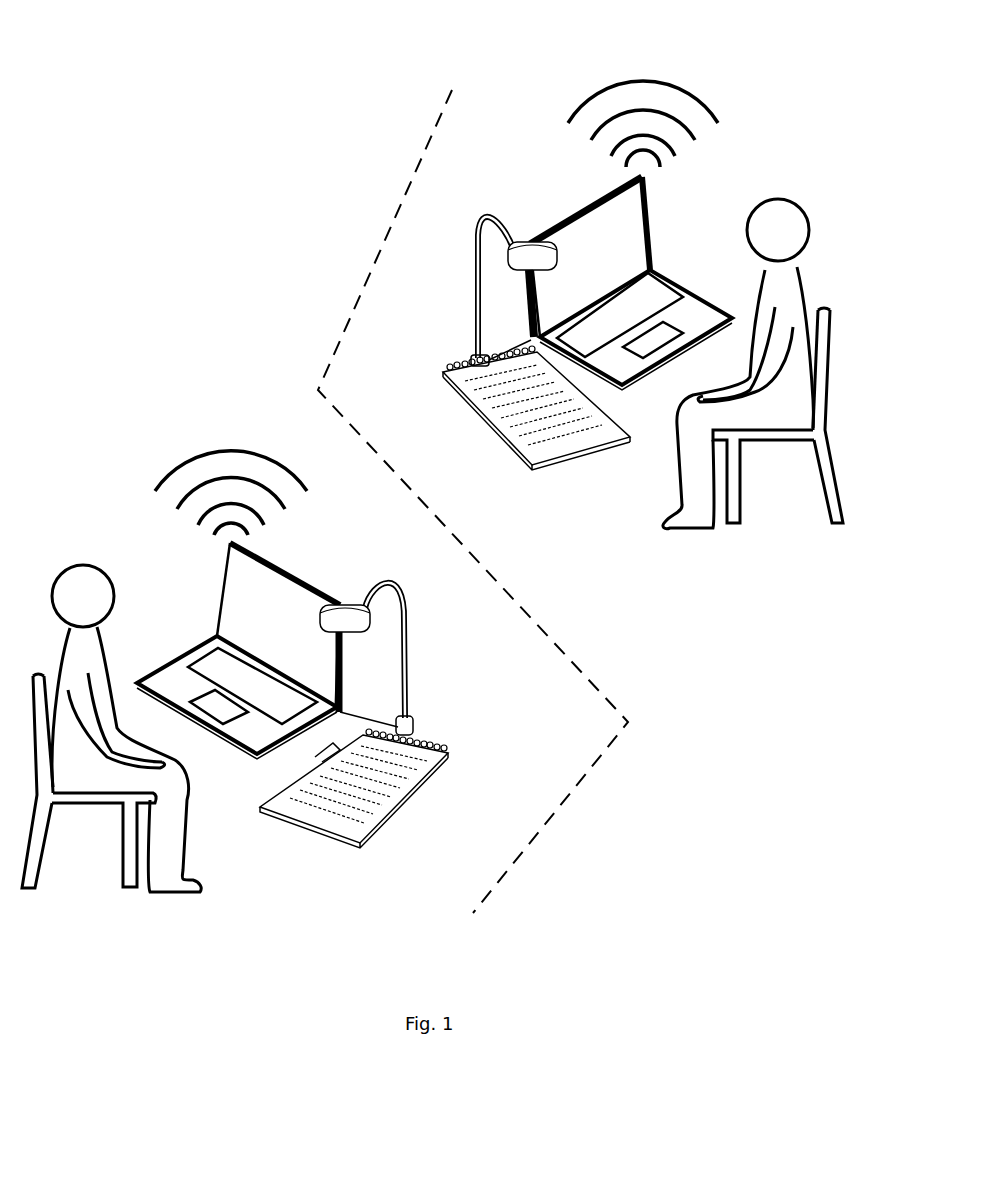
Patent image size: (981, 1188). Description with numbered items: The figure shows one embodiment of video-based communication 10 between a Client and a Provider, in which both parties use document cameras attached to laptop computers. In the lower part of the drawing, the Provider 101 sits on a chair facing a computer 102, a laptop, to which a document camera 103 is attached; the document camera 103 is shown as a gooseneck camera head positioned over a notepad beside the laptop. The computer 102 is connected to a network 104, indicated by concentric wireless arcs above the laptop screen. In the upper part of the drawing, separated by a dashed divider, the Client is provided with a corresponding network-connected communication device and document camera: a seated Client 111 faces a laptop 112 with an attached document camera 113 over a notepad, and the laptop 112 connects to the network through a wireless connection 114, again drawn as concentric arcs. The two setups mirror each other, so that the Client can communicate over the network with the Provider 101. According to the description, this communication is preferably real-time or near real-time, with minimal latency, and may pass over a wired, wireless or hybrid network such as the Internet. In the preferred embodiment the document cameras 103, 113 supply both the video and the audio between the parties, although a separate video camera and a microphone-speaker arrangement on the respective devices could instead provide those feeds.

The video-based communication 10 is at (150, 150).
The Provider 101 is at (106, 568).
The computer 102 is at (276, 560).
The document camera 103 is at (422, 600).
The network 104 is at (231, 447).
The second user 111 is at (757, 203).
The second computing device (laptop) 112 is at (558, 214).
The second document camera 113 is at (463, 255).
The second wireless network connection 114 is at (648, 79).